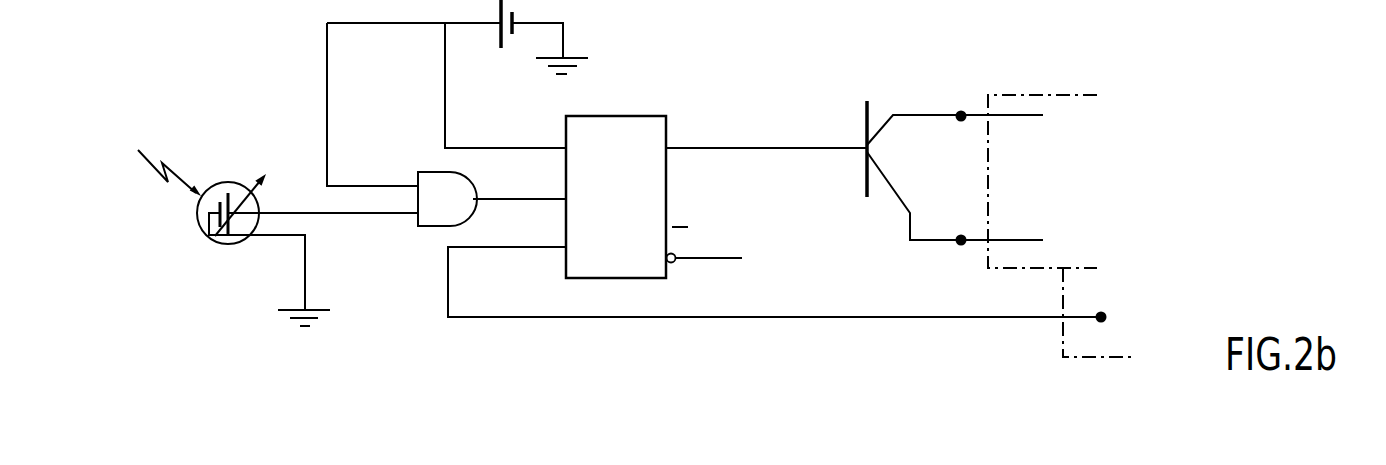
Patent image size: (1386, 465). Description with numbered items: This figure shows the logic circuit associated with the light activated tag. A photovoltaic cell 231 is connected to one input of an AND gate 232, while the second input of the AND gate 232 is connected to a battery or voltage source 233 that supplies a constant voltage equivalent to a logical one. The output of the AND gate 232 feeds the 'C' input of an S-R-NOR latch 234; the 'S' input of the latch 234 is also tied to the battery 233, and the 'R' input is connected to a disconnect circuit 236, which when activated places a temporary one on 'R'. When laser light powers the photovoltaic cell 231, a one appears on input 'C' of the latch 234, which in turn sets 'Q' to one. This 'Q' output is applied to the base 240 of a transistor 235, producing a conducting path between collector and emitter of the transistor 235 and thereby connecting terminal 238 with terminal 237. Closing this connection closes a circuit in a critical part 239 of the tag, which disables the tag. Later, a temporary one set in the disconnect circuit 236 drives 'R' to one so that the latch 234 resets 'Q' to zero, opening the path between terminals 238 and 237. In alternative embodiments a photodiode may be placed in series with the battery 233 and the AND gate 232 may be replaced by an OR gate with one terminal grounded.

The photovoltaic cell 231 is at (230, 182).
The AND gate 232 is at (433, 170).
The battery or voltage source 233 is at (498, 37).
The S-R-NOR latch 234 is at (617, 115).
The transistor 235 is at (898, 115).
The disconnect circuit 236 is at (1100, 307).
The emitter terminal 237 is at (965, 248).
The collector terminal 238 is at (970, 108).
The critical part of the tag 239 is at (1023, 105).
The base 240 is at (730, 148).